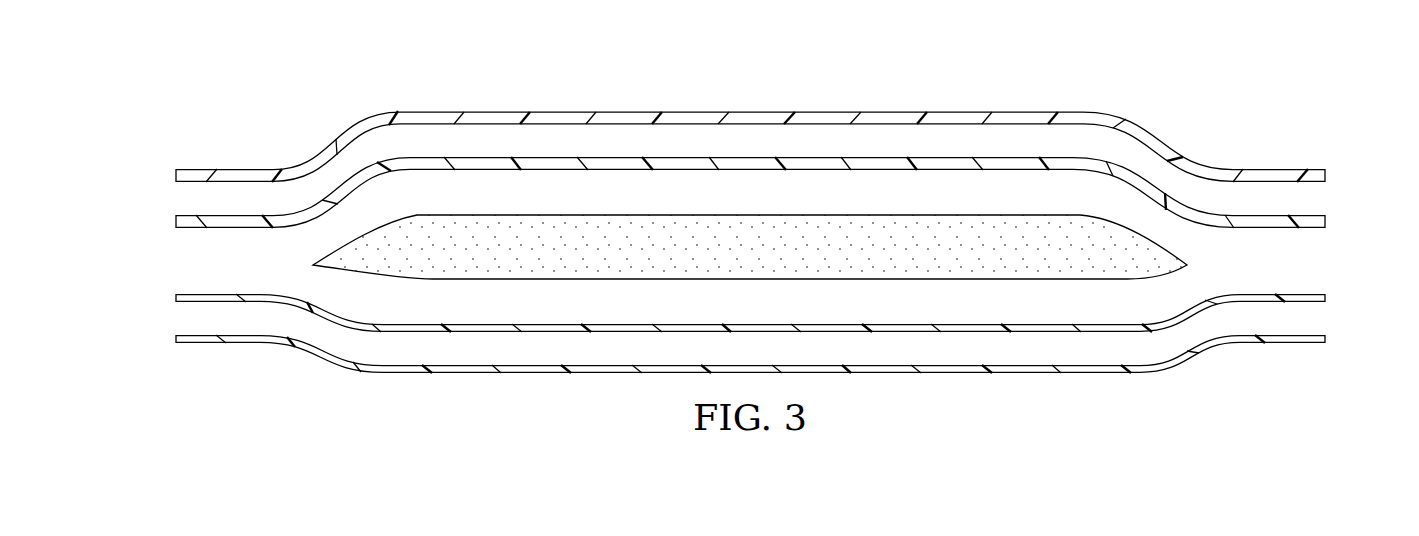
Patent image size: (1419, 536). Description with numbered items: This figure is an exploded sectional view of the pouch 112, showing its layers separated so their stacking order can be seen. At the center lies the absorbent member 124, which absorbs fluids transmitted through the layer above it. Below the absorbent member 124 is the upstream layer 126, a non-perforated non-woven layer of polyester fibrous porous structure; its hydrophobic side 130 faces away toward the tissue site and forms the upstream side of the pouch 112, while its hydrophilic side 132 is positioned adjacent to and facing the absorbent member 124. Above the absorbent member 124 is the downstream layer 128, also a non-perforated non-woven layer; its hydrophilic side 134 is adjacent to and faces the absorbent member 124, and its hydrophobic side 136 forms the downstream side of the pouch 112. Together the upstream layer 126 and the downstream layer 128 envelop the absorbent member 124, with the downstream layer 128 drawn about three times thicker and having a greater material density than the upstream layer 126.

The pouch 112 is at (564, 85).
The absorbent member 124 is at (774, 260).
The upstream layer 126 is at (170, 298).
The downstream layer 128 is at (170, 170).
The hydrophobic side 130 is at (1327, 340).
The hydrophilic side 132 is at (1327, 298).
The hydrophilic side 134 is at (1327, 223).
The hydrophobic side 136 is at (1327, 178).